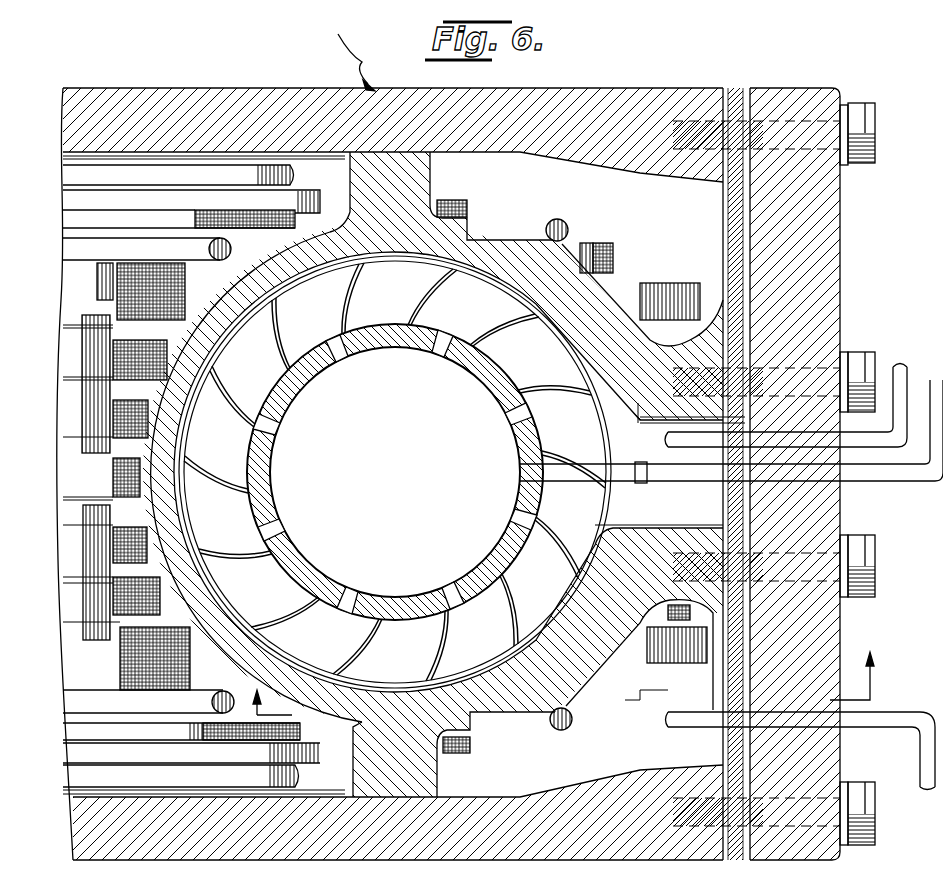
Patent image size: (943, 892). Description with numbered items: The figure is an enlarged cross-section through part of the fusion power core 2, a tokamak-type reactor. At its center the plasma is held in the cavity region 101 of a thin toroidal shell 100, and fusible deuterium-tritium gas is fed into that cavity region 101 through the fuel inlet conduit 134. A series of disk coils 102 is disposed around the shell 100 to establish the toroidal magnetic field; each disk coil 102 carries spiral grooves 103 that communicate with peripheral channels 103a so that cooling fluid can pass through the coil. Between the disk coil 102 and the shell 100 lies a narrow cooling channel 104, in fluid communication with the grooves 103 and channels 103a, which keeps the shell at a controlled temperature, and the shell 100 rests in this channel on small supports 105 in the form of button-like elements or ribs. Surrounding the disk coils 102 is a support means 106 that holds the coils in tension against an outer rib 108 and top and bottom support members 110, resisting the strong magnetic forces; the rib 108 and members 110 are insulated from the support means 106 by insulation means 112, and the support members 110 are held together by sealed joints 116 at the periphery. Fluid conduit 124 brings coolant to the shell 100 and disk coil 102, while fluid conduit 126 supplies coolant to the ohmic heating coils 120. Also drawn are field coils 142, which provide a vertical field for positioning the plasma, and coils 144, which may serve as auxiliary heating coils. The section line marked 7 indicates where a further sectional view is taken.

The fusion power core 2 is at (346, 57).
The section line 7- 7 is at (566, 672).
The toroidal shell 100 is at (520, 531).
The cavity region 101 is at (407, 416).
The disk coils 102 is at (263, 480).
The spiral grooves 103 is at (452, 300).
The peripheral channels 103a is at (517, 292).
The cooling channel 104 is at (492, 374).
The supports 105 is at (292, 410).
The support means 106 is at (633, 675).
The outer rib 108 is at (835, 218).
The support members 110 is at (168, 93).
The insulation means 112 is at (425, 152).
The sealed joints 116 is at (722, 105).
The ohmic heating coils 120 is at (204, 390).
The fluid conduit 124 is at (893, 372).
The fluid conduit 126 is at (900, 712).
The fuel inlet conduit 134 is at (882, 472).
The field coils 142 is at (278, 172).
The coils 144 is at (553, 220).